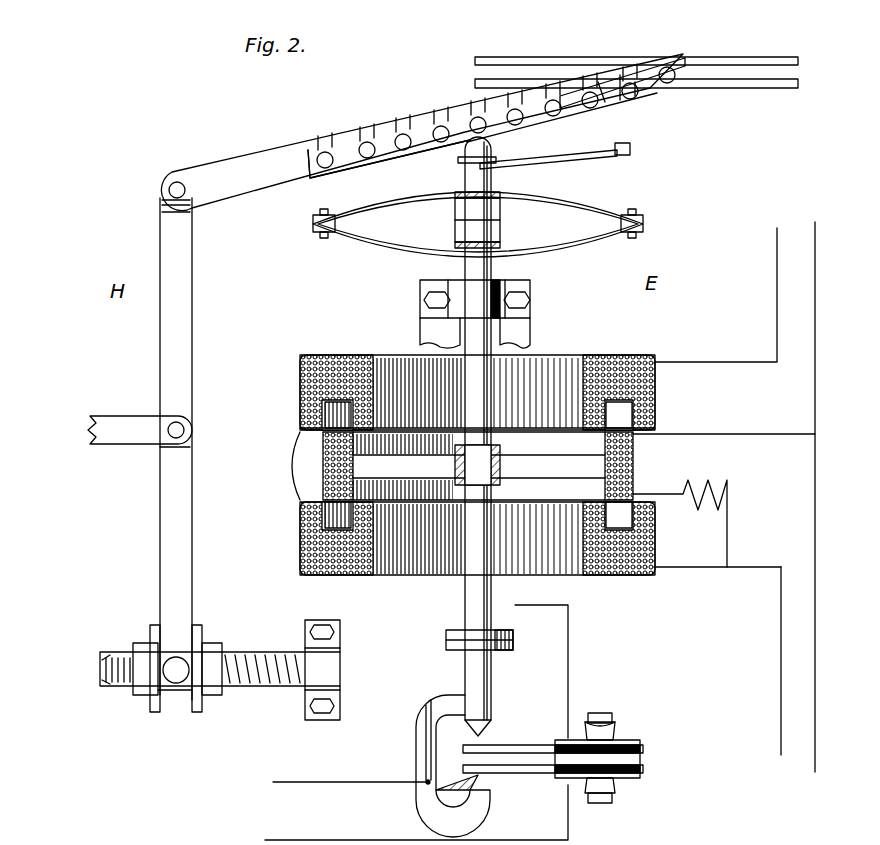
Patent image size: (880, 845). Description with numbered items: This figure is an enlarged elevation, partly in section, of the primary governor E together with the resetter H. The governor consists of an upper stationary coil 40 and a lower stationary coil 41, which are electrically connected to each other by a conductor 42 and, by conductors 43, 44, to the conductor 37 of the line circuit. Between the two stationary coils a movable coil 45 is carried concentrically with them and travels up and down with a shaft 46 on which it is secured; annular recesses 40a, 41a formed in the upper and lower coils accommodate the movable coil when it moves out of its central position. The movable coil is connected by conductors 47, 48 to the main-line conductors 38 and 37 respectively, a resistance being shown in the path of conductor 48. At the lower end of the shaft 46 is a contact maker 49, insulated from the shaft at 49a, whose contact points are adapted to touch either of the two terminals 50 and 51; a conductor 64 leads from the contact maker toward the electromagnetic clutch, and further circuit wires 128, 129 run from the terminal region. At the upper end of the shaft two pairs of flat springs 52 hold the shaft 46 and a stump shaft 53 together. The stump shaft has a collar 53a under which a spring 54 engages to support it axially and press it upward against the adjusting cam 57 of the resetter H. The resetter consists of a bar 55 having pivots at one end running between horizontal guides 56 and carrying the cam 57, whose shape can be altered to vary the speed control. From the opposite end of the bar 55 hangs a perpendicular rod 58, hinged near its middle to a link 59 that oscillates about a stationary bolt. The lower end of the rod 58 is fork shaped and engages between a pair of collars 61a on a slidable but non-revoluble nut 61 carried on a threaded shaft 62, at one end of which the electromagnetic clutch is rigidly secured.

The conductor of the line circuit 37 is at (781, 720).
The conductor of the main line 38 is at (813, 750).
The upper stationary coil 40 is at (628, 355).
The annular recess 40a is at (632, 415).
The lower stationary coil 41 is at (655, 548).
The annular recess 41a is at (608, 522).
The conductor 42 is at (296, 452).
The conductor 43 is at (745, 570).
The conductor 44 is at (730, 362).
The movable coil 45 is at (637, 470).
The shaft 46 is at (465, 268).
The conductor 47 is at (727, 434).
The conductor 48 is at (730, 500).
The contact maker 49 is at (428, 703).
The insulation 49a is at (446, 640).
The terminal 50 is at (535, 740).
The terminal 51 is at (512, 768).
The flat springs 52 is at (500, 229).
The stump shaft 53 is at (478, 177).
The collar 53a is at (389, 171).
The spring 54 is at (548, 162).
The bar 55 is at (287, 163).
The horizontal guides 56 is at (740, 88).
The adjusting cam 57 is at (628, 100).
The perpendicular rod 58 is at (192, 322).
The link 59 is at (130, 425).
The nut 61 is at (142, 645).
The collars 61a is at (200, 632).
The threaded shaft 62 is at (115, 690).
The conductor 64 is at (340, 784).
The circuit wire 128 is at (332, 843).
The circuit wire 129 is at (541, 659).